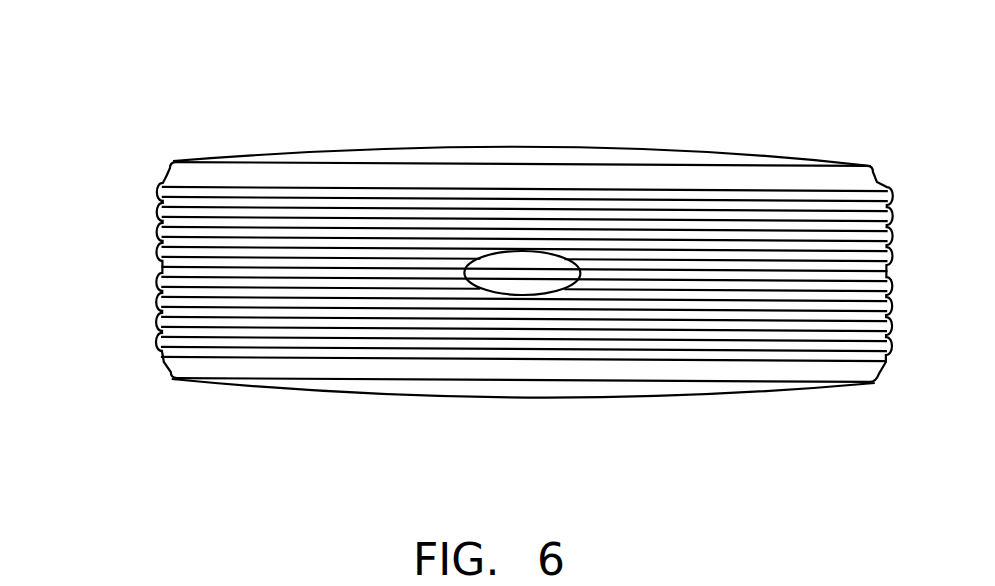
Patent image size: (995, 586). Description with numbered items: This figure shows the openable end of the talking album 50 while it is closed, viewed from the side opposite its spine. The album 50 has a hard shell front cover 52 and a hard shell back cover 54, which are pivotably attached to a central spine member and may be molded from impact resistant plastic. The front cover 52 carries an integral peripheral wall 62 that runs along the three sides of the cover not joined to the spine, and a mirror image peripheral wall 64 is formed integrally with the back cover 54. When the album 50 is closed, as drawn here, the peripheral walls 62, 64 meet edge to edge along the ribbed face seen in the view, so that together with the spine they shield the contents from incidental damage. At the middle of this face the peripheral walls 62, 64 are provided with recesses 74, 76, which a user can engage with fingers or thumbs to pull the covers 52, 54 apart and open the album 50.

The album 50 is at (134, 105).
The hard shell front cover 52 is at (622, 159).
The hard shell back cover 54 is at (607, 389).
The peripheral wall 62 is at (167, 202).
The peripheral wall 64 is at (167, 337).
The recess 74 is at (528, 260).
The recess 76 is at (529, 282).